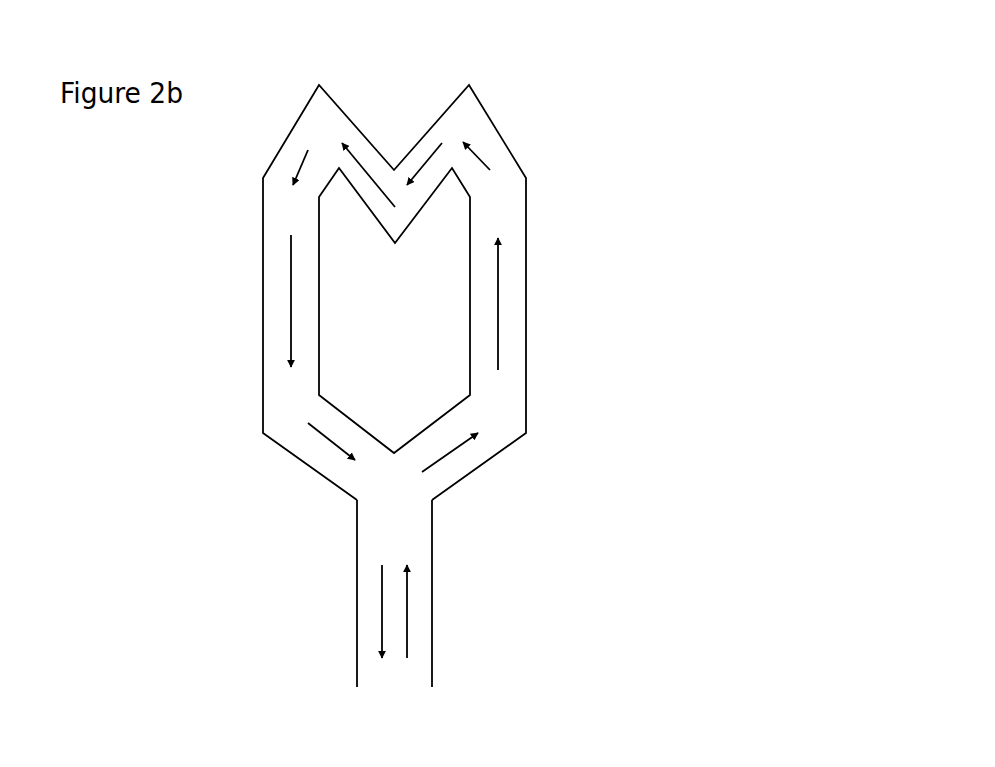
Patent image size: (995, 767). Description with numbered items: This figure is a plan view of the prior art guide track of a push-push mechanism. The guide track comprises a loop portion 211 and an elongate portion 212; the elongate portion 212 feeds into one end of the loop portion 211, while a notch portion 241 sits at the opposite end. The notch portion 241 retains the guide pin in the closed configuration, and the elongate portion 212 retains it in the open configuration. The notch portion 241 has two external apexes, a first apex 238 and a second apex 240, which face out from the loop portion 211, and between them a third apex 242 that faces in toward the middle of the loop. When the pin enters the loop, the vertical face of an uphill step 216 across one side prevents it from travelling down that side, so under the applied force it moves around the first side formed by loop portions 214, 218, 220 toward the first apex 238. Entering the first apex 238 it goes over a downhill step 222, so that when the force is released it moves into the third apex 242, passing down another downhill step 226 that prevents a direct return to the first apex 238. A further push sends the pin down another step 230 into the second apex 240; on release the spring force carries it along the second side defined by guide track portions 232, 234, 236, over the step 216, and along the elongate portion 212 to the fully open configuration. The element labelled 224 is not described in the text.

The loop portion 211 is at (667, 75).
The elongate portion 212 is at (667, 502).
The loop portion 214 is at (478, 468).
The step 216 is at (393, 453).
The loop portion 218 is at (527, 382).
The loop portion 220 is at (508, 145).
The downhill step 222 is at (455, 165).
The central wall 224 is at (445, 112).
The downhill step 226 is at (422, 204).
The step 230 is at (363, 139).
The guide track portion 232 is at (295, 125).
The guide track portion 234 is at (263, 283).
The guide track portion 236 is at (283, 447).
The first apex 238 is at (470, 82).
The second apex 240 is at (318, 83).
The notch portion 241 is at (697, 75).
The third apex 242 is at (395, 252).